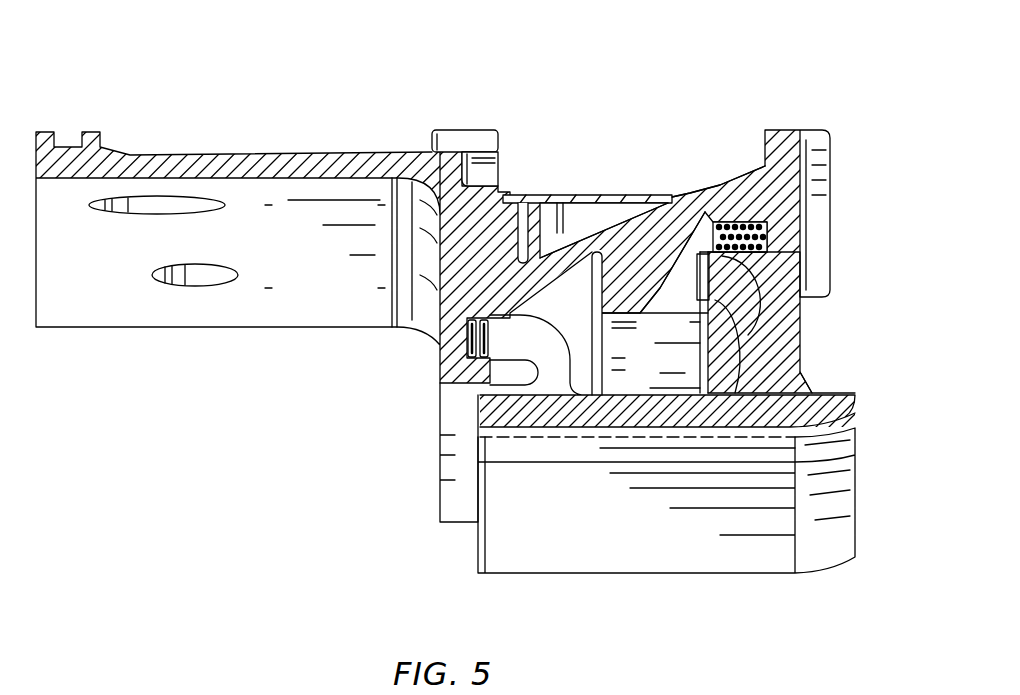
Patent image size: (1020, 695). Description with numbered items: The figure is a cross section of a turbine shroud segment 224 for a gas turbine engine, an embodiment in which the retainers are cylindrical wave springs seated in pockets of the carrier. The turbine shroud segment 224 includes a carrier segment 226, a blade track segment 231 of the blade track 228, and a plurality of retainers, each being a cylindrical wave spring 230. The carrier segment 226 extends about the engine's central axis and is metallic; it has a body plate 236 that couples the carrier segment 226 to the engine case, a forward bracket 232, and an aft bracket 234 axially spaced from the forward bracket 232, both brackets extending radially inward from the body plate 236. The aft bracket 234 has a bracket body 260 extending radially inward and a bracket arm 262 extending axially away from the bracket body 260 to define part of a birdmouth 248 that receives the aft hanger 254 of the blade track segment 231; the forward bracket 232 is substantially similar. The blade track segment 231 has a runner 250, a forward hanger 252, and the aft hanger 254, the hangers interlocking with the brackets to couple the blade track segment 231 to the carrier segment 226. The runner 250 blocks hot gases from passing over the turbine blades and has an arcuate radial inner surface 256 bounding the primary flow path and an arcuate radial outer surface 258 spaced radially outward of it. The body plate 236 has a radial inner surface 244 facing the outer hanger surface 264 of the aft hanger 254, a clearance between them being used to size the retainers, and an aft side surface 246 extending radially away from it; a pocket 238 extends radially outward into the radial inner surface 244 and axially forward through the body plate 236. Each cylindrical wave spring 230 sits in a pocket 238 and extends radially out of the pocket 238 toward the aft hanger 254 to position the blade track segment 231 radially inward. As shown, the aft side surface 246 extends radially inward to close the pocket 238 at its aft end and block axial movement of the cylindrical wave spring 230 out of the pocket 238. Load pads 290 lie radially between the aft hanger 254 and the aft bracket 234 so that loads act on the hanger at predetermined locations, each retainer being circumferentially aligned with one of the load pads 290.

The turbine shroud segment 224 is at (680, 90).
The carrier segment 226 is at (422, 250).
The blade track 228 is at (477, 478).
The cylindrical wave spring 230 is at (772, 235).
The blade track segment 231 is at (455, 538).
The forward bracket 232 is at (437, 342).
The aft bracket 234 is at (594, 291).
The body plate 236 is at (540, 268).
The pocket 238 is at (705, 228).
The radial inner surface 244 is at (712, 222).
The aft side surface 246 is at (830, 135).
The birdmouth 248 is at (805, 343).
The runner 250 is at (477, 412).
The forward hanger 252 is at (530, 370).
The aft hanger 254 is at (807, 368).
The radial inner surface 256 is at (666, 500).
The radial outer surface 258 is at (647, 385).
The bracket body 260 is at (700, 265).
The bracket arm 262 is at (705, 318).
The outer hanger surface 264 is at (805, 302).
The load pad 290 is at (657, 297).